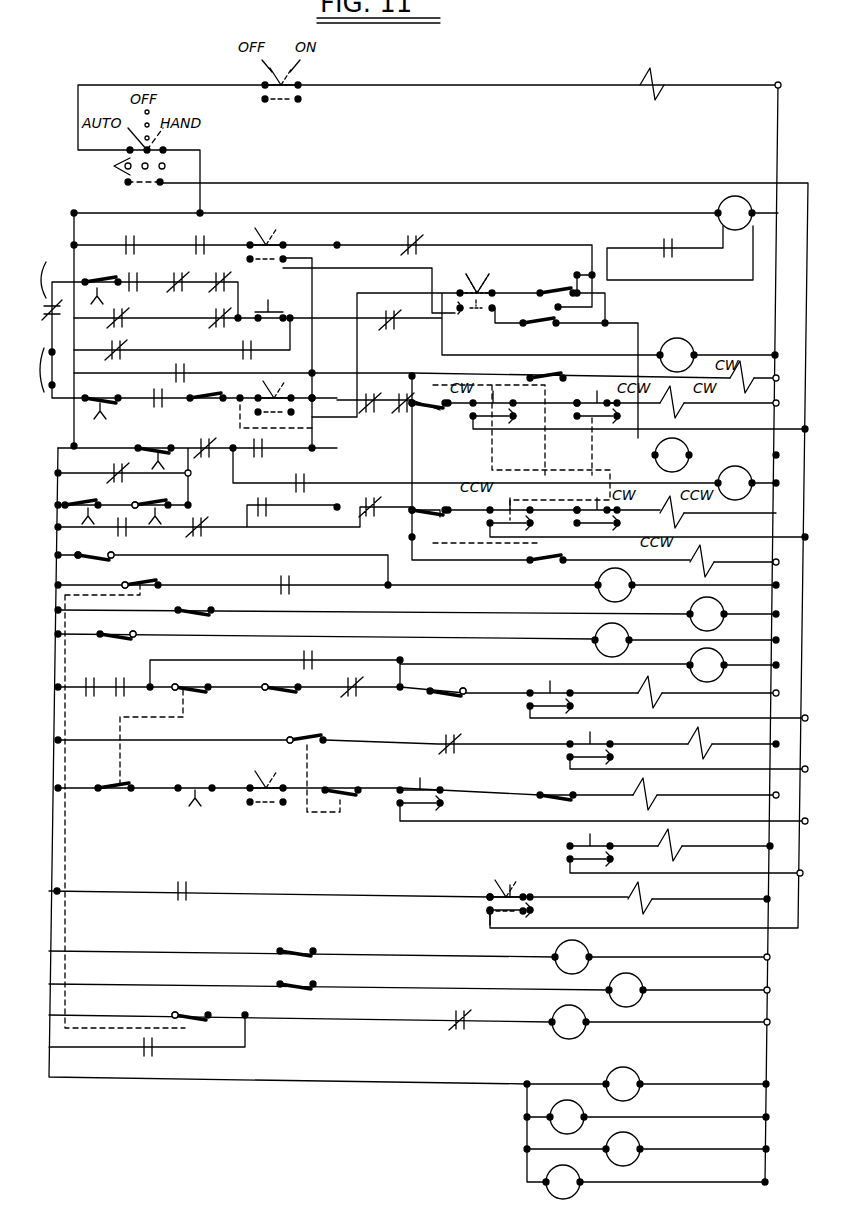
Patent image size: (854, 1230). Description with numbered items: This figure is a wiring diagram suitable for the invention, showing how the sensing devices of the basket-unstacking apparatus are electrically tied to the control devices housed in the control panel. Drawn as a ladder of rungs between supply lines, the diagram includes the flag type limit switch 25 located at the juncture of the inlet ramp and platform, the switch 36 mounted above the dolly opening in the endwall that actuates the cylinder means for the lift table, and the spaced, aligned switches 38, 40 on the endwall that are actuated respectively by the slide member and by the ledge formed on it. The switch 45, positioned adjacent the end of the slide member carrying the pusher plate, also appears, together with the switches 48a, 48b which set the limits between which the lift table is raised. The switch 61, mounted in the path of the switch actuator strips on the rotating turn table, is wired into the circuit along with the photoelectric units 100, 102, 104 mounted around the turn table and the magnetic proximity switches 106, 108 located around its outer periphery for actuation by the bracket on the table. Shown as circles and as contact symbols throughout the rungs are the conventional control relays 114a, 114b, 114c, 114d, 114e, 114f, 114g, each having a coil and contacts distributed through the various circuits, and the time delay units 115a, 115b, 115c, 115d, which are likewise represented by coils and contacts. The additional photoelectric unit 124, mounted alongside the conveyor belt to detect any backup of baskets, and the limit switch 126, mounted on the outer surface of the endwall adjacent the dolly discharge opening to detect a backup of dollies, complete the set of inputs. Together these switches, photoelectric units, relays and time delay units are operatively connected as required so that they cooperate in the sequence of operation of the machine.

The flag type limit switch 25 is at (280, 683).
The switch 36 is at (192, 683).
The switch 38 is at (138, 580).
The switch 40 is at (292, 988).
The switch 45 is at (308, 736).
The switch 48a is at (556, 792).
The switch 48b is at (446, 688).
The switch 61 is at (540, 374).
The photoelectric unit 100 is at (657, 1078).
The photoelectric unit 102 is at (655, 1110).
The photoelectric unit 104 is at (660, 1175).
The magnetic proximity switch 106 is at (120, 624).
The magnetic proximity switch 108 is at (200, 598).
The control relay 114a is at (218, 272).
The control relay 114b is at (702, 343).
The control relay 114c is at (312, 652).
The control relay 114d is at (214, 510).
The control relay 114e is at (656, 981).
The control relay 114f is at (553, 1016).
The control relay 114g is at (660, 240).
The time delay unit 115a is at (698, 444).
The time delay unit 115b is at (718, 483).
The time delay unit 115c is at (718, 206).
The time delay unit 115d is at (598, 947).
The photoelectric unit 124 is at (657, 1143).
The limit switch 126 is at (296, 948).